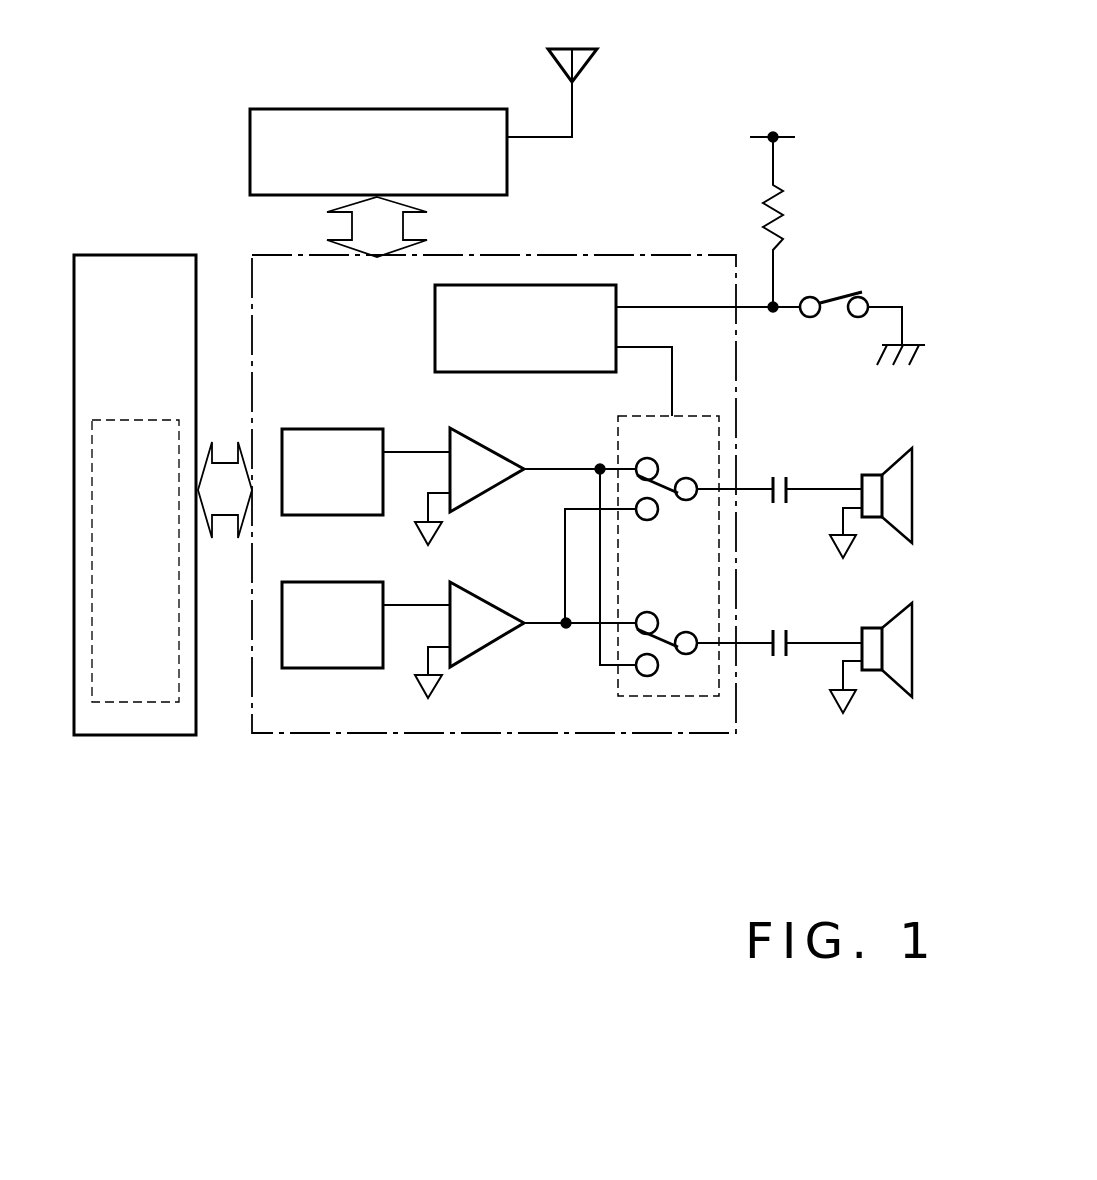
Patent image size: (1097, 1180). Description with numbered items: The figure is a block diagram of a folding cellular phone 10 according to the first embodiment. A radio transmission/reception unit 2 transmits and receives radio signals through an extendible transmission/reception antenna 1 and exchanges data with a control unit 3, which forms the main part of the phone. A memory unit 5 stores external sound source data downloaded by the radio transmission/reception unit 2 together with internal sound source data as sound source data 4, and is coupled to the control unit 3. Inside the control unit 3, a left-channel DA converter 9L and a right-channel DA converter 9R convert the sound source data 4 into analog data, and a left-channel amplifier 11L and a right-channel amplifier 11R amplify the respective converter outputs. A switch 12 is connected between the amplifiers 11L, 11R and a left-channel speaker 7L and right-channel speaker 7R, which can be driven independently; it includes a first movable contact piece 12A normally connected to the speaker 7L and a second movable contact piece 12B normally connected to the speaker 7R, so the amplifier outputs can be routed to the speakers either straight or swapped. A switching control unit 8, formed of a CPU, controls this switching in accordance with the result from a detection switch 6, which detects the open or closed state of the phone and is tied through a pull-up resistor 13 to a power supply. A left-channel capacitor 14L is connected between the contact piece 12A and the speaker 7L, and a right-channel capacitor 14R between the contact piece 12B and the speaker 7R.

The transmission/reception antenna 1 is at (597, 60).
The radio transmission/reception unit 2 is at (338, 109).
The control unit 3 is at (304, 733).
The sound source data 4 is at (128, 420).
The memory unit 5 is at (105, 255).
The detection switch 6 is at (838, 296).
The left-channel speaker 7L is at (875, 475).
The right-channel speaker 7R is at (875, 628).
The switching control unit 8 is at (435, 321).
The left-channel DA converter 9L is at (304, 429).
The right-channel DA converter 9R is at (304, 582).
The folding cellular phone 10 is at (833, 82).
The left-channel amplifier 11L is at (486, 447).
The right-channel amplifier 11R is at (486, 601).
The switch 12 is at (692, 416).
The first movable contact piece 12A is at (666, 482).
The second movable contact piece 12B is at (666, 636).
The pull-up resistor 13 is at (788, 200).
The left-channel capacitor 14L is at (779, 472).
The right-channel capacitor 14R is at (779, 625).